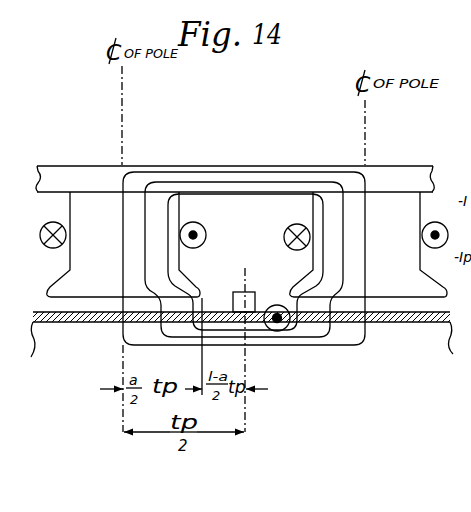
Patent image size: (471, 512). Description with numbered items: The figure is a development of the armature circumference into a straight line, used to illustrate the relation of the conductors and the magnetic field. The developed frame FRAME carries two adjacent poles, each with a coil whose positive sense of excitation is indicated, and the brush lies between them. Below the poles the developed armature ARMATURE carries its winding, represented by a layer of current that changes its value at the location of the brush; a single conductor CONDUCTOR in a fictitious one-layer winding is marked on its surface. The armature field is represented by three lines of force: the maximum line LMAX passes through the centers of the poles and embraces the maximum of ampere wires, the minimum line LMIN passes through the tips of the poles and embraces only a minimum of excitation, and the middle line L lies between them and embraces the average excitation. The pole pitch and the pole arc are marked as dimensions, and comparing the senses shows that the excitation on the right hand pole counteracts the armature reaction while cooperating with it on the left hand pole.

The frame (developed) with poles and field coils FRAME is at (79, 163).
The line of force L max. LMAX is at (134, 167).
The line of force L is at (158, 182).
The line of force L min. LMIN is at (178, 193).
The armature ARMATURE is at (78, 326).
The conductor CONDUCTOR is at (246, 315).